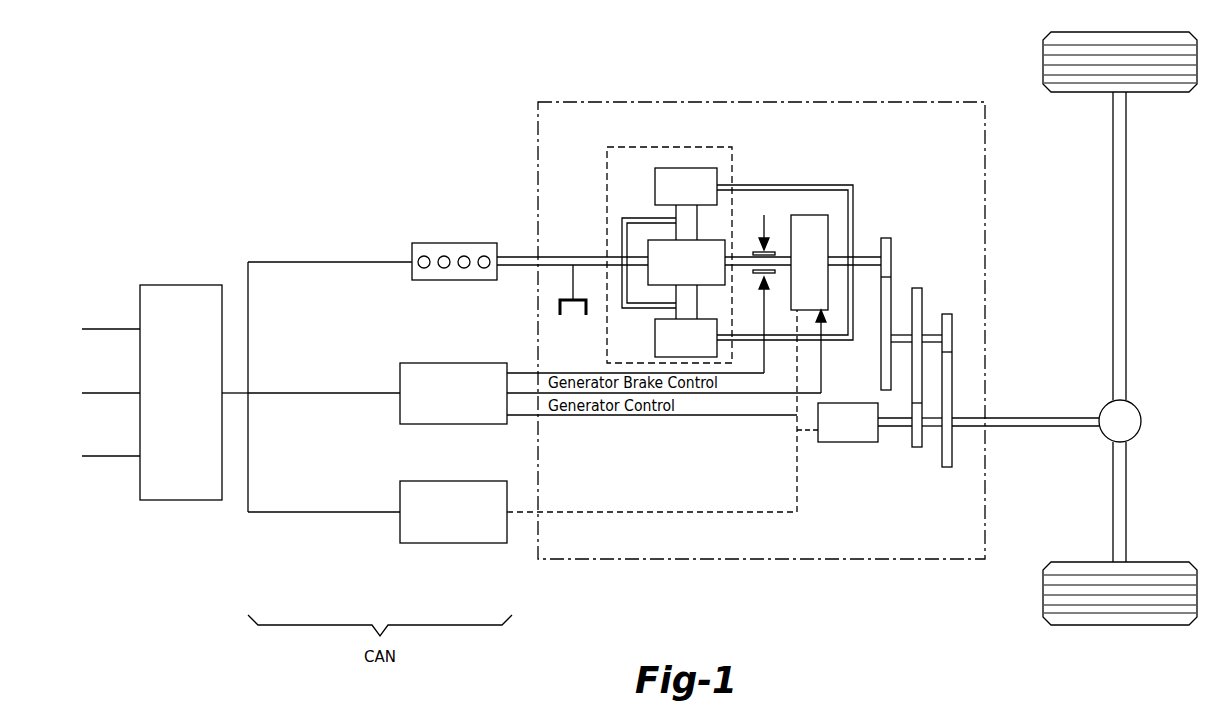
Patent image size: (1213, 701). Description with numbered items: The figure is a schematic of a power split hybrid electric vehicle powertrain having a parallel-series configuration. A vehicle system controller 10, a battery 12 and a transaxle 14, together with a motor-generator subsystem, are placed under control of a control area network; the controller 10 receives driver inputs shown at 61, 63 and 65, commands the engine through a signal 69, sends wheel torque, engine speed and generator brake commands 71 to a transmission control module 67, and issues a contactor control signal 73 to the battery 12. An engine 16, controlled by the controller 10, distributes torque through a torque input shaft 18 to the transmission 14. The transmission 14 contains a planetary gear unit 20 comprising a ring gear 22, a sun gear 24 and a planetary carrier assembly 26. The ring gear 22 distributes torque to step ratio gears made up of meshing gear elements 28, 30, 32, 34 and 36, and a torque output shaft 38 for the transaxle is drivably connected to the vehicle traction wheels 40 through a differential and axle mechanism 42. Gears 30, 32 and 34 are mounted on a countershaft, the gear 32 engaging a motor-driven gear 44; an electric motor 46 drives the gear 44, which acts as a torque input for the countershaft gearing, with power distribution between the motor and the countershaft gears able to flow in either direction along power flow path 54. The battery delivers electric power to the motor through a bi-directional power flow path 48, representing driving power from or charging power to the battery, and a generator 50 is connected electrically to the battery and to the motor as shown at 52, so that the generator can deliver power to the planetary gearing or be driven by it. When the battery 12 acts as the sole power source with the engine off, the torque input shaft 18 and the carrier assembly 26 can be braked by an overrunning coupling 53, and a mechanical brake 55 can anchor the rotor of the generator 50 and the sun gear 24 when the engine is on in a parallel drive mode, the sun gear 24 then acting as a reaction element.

The vehicle system controller 10 is at (180, 285).
The battery 12 is at (455, 544).
The transaxle 14 is at (540, 101).
The engine 16 is at (455, 281).
The torque input shaft 18 is at (515, 254).
The planetary gear unit 20 is at (748, 157).
The ring gear 22 is at (655, 178).
The sun gear 24 is at (648, 262).
The planetary carrier assembly 26 is at (643, 218).
The gear element 28 is at (891, 252).
The gear element 30 is at (881, 377).
The gear element 32 is at (922, 300).
The gear element 34 is at (952, 331).
The gear element 36 is at (952, 453).
The torque output shaft 38 is at (940, 222).
The vehicle traction wheels 40 is at (1043, 62).
The differential and axle mechanism 42 is at (1141, 421).
The motor-driven gear 44 is at (917, 440).
The electric motor 46 is at (848, 443).
The power flow path 48 is at (752, 510).
The generator 50 is at (828, 227).
The torque flow path 52 is at (797, 406).
The overrunning coupling 53 is at (573, 277).
The power flow path 54 is at (808, 432).
The mechanical brake 55 is at (763, 229).
The brake pedal position sensor input (BPPS) 61 is at (90, 461).
The gear selector input (PRND) 63 is at (90, 334).
The accelerator pedal position sensor input (APPS) 65 is at (90, 398).
The transmission control module (TCM) 67 is at (455, 425).
The desired engine torque signal 69 is at (326, 264).
The desired wheel torque / engine speed / generator brake command signals 71 is at (326, 395).
The contactor control signal 73 is at (326, 514).